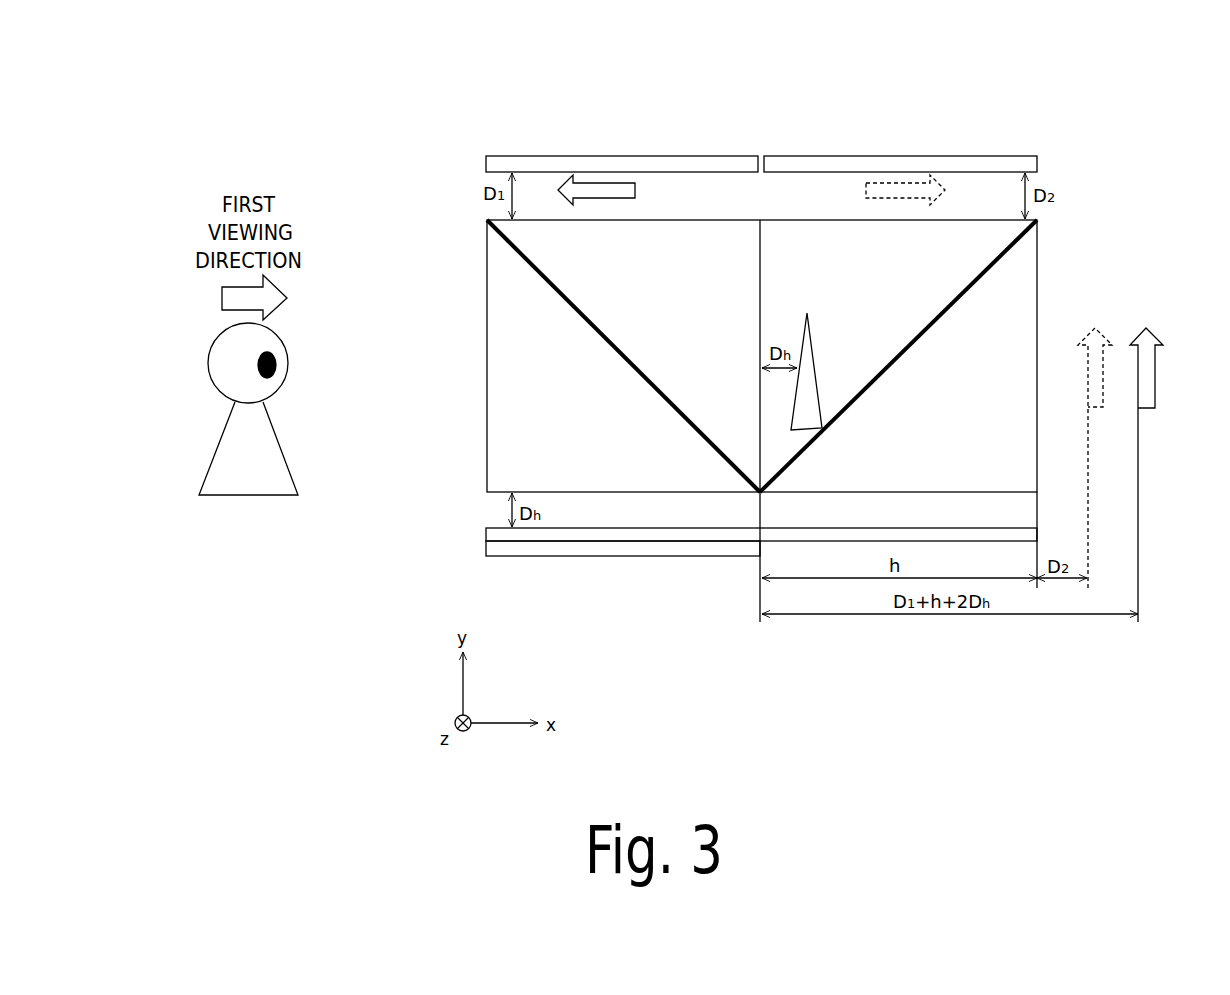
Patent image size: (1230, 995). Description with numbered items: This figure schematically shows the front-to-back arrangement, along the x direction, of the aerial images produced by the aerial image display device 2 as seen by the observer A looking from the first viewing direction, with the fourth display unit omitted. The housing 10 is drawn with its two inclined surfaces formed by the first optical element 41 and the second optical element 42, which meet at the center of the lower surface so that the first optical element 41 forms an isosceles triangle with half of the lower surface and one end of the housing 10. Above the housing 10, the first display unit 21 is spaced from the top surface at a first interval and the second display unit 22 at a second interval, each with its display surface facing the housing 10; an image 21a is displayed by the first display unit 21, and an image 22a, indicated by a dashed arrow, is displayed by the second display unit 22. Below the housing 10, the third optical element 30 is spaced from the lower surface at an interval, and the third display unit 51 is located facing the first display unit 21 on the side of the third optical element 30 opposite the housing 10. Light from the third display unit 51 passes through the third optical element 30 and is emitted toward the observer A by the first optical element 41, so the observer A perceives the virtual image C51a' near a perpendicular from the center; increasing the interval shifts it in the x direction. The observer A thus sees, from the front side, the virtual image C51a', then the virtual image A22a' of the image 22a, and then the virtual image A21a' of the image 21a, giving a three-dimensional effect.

The aerial image display device 2 is at (790, 81).
The housing 10 is at (1040, 232).
The first display unit 21 is at (632, 152).
The second display unit 22 is at (903, 152).
The image 21a is at (639, 192).
The image 22a is at (866, 190).
The third optical element 30 is at (618, 527).
The first optical element 41 is at (595, 324).
The second optical element 42 is at (915, 324).
The third display unit 51 is at (624, 558).
The observer A is at (218, 343).
The virtual image C51a' is at (806, 338).
The virtual image A22a' is at (1091, 431).
The virtual image A21a' is at (1141, 436).